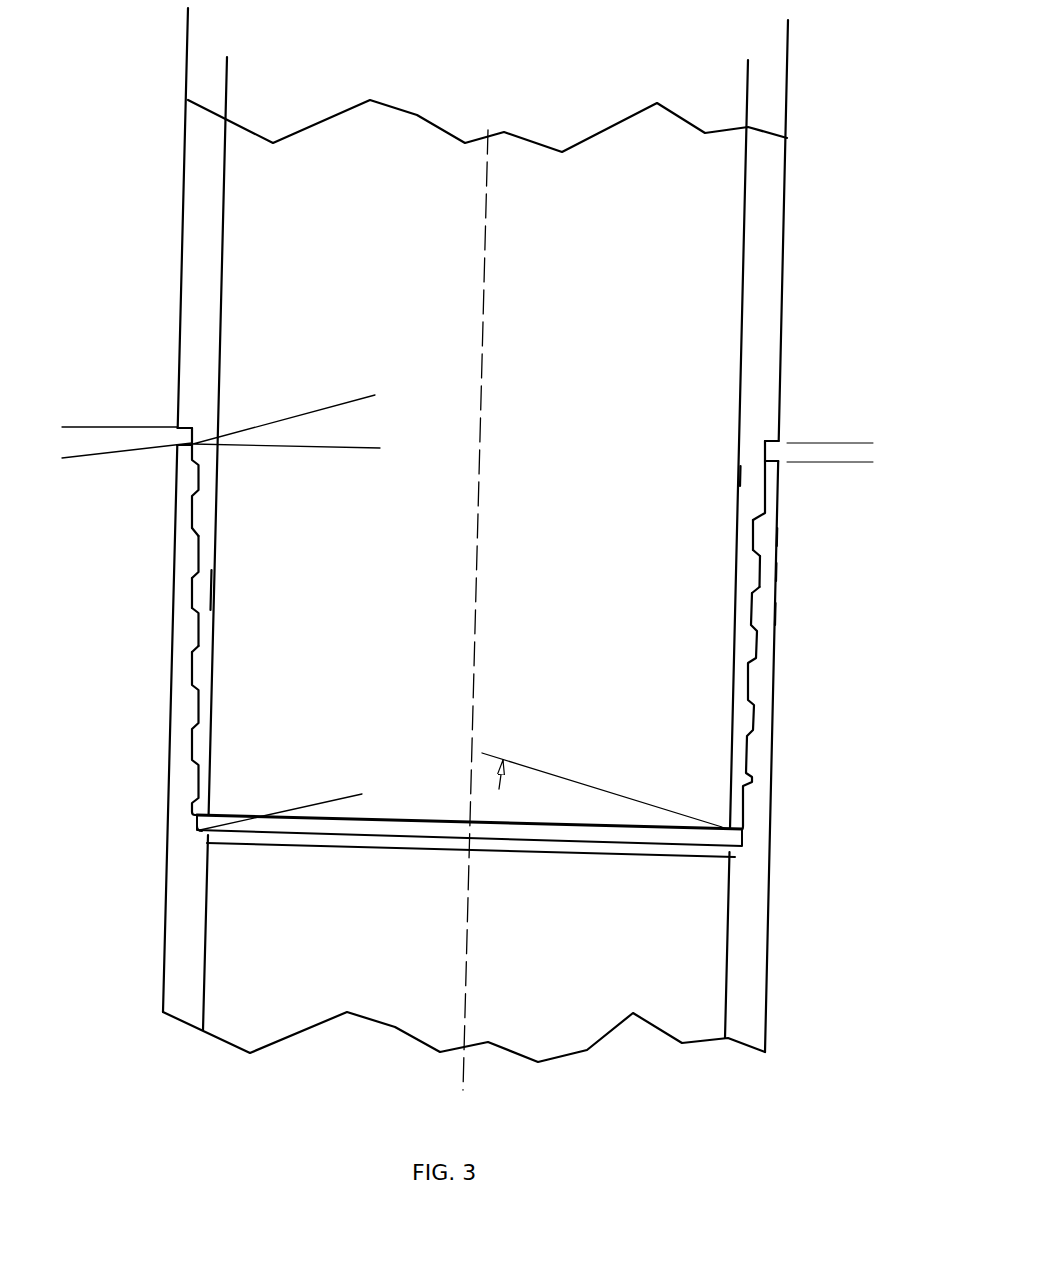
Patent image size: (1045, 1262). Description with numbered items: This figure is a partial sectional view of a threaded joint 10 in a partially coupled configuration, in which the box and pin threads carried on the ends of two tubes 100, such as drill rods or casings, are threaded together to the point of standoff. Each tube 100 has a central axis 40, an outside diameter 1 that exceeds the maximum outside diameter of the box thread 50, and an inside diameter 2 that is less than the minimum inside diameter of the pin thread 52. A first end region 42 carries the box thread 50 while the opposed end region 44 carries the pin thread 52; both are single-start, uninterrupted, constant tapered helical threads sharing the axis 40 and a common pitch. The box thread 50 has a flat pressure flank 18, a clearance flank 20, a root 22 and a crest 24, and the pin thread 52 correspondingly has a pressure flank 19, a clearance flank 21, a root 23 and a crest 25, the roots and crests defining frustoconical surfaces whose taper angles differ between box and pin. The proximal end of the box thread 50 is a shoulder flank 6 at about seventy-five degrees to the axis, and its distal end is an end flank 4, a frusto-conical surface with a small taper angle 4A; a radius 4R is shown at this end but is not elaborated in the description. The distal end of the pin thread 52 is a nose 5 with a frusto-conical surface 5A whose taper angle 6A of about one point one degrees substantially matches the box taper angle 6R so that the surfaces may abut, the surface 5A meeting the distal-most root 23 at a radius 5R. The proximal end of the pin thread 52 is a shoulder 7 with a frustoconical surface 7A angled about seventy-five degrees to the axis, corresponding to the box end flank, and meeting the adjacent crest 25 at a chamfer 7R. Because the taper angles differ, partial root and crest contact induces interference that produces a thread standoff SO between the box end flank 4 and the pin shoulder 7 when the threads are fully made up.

The outside diameter 1 is at (786, 43).
The inside diameter 2 is at (746, 92).
The tube 100 is at (782, 283).
The threaded joint 10 is at (834, 342).
The central axis 40 is at (482, 455).
The shoulder flank 6 is at (188, 633).
The first end region 42 is at (751, 635).
The nose 5 is at (212, 812).
The shoulder 7 is at (745, 476).
The end flank 4 is at (770, 461).
The chamfer 7R is at (190, 424).
The left notch lower radius 4R is at (188, 456).
The frustoconical surface 7A is at (103, 493).
The taper angle 4A is at (333, 360).
The thread standoff SO is at (847, 507).
The clearance flank 21 is at (195, 532).
The clearance flank 20 is at (190, 541).
The pin thread 52 is at (208, 590).
The pressure flank 18 is at (192, 638).
The pressure flank 19 is at (197, 652).
The root 23 is at (747, 535).
The crest 24 is at (771, 536).
The crest 25 is at (752, 571).
The root 22 is at (767, 571).
The opposed end region 44 is at (753, 592).
The box thread 50 is at (773, 613).
The taper angle 6A is at (333, 880).
The box taper angle 6R is at (192, 832).
The frusto-conical surface 5A is at (495, 819).
The radius 5R is at (720, 809).